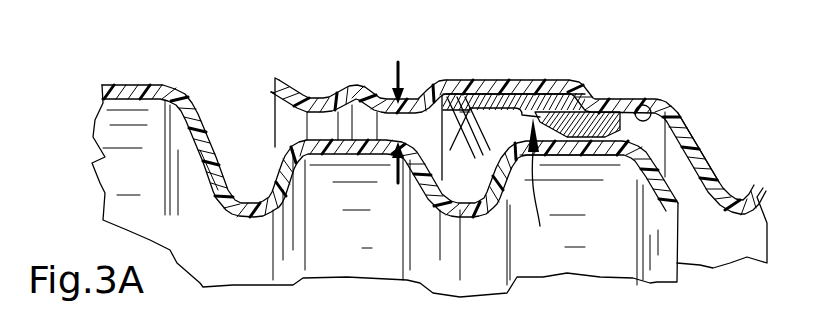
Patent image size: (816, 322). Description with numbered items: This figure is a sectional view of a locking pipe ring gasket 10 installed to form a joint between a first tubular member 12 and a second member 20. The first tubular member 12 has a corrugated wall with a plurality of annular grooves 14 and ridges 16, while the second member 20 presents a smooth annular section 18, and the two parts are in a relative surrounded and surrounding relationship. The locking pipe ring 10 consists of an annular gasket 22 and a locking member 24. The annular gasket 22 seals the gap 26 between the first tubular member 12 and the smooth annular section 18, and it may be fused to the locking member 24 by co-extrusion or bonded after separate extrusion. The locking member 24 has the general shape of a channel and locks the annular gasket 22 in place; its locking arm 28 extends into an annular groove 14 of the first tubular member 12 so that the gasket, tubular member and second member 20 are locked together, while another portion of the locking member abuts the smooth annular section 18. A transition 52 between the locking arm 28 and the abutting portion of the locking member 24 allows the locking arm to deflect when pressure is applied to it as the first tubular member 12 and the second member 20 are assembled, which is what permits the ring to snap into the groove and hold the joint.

The locking pipe ring gasket 10 is at (429, 191).
The first tubular member 12 is at (148, 90).
The annular groove 14 is at (235, 200).
The ridge 16 is at (340, 105).
The smooth annular section 18 is at (647, 106).
The second member 20 is at (688, 120).
The annular gasket 22 is at (600, 122).
The locking member 24 is at (470, 96).
The gap 26 is at (384, 135).
The locking arm 28 is at (482, 143).
The transition 52 is at (462, 98).